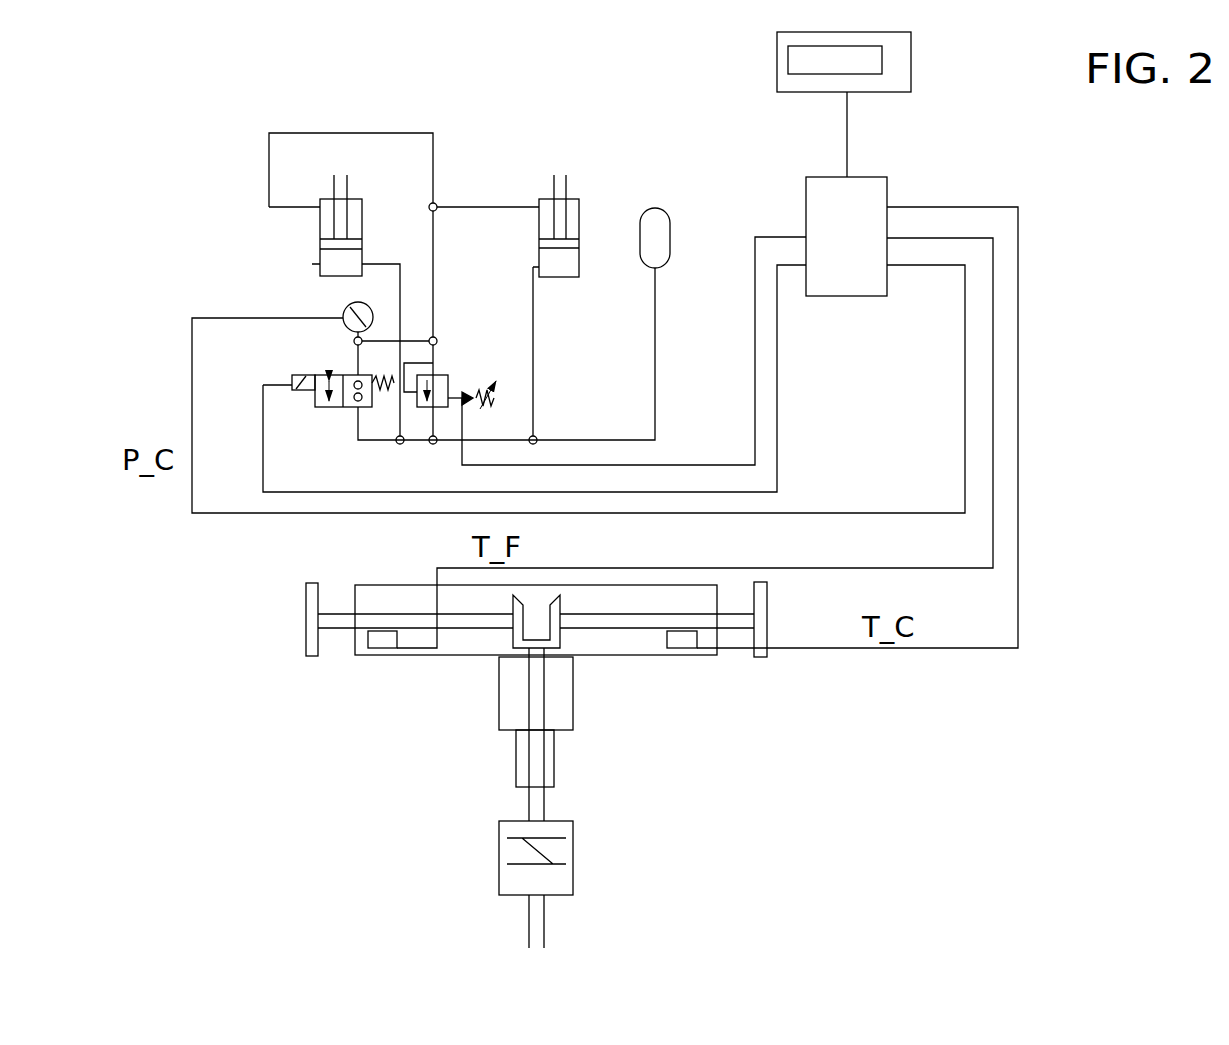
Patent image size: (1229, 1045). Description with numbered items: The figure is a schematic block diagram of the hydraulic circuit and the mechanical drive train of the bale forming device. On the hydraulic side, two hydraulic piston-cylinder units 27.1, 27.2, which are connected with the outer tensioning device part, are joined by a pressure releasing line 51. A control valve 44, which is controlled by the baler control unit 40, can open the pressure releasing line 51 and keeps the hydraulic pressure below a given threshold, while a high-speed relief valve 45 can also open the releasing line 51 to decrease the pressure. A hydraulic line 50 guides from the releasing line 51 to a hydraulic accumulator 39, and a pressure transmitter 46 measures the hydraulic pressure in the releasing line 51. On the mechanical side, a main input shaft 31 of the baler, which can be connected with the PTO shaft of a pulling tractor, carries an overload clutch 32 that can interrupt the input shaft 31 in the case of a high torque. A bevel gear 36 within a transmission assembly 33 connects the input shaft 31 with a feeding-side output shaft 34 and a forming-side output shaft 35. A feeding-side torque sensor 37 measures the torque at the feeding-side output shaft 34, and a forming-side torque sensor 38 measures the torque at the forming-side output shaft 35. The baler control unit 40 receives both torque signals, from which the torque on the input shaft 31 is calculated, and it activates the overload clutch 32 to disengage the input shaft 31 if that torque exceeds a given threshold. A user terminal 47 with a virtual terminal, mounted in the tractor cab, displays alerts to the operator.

The hydraulic piston-cylinder unit 27.1 is at (334, 197).
The hydraulic piston-cylinder unit 27.2 is at (556, 197).
The main input shaft 31 is at (527, 925).
The overload clutch 32 is at (577, 848).
The transmission assembly 33 is at (370, 600).
The feeding-side output shaft 34 is at (341, 622).
The forming-side output shaft 35 is at (743, 622).
The bevel gear 36 is at (533, 610).
The feeding-side torque sensor 37 is at (385, 640).
The forming-side torque sensor 38 is at (680, 638).
The hydraulic accumulator 39 is at (660, 222).
The baler control unit 40 is at (828, 283).
The control valve 44 is at (443, 372).
The high-speed relief valve 45 is at (337, 410).
The pressure transmitter 46 is at (340, 322).
The user terminal 47 is at (915, 62).
The hydraulic line 50 is at (658, 400).
The pressure releasing line 51 is at (372, 442).